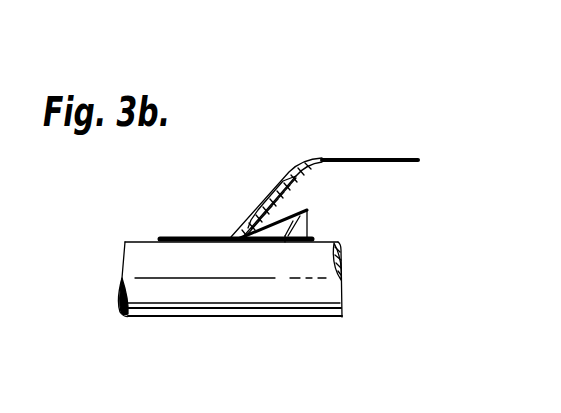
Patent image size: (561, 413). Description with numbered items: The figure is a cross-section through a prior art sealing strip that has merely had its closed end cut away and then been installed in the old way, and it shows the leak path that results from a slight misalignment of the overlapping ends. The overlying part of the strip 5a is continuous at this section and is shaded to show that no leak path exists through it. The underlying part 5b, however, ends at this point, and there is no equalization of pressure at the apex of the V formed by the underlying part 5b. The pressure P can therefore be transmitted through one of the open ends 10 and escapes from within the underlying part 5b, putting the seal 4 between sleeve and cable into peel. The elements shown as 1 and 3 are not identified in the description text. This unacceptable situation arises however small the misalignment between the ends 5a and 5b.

The upper conductor strip 1 is at (373, 158).
The cylindrical body / terminal 3 is at (327, 282).
The seal 4 is at (183, 238).
The overlying part of the strip 5a is at (295, 190).
The underlying part of the strip 5b is at (308, 228).
The open end 10 is at (287, 238).
The pressure P is at (272, 242).